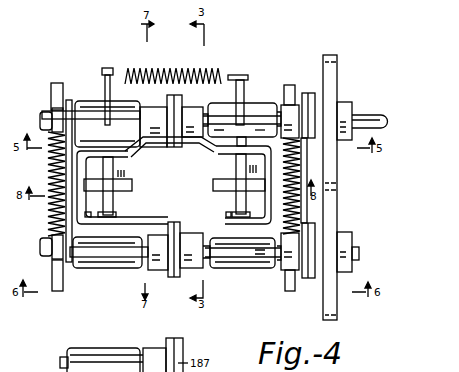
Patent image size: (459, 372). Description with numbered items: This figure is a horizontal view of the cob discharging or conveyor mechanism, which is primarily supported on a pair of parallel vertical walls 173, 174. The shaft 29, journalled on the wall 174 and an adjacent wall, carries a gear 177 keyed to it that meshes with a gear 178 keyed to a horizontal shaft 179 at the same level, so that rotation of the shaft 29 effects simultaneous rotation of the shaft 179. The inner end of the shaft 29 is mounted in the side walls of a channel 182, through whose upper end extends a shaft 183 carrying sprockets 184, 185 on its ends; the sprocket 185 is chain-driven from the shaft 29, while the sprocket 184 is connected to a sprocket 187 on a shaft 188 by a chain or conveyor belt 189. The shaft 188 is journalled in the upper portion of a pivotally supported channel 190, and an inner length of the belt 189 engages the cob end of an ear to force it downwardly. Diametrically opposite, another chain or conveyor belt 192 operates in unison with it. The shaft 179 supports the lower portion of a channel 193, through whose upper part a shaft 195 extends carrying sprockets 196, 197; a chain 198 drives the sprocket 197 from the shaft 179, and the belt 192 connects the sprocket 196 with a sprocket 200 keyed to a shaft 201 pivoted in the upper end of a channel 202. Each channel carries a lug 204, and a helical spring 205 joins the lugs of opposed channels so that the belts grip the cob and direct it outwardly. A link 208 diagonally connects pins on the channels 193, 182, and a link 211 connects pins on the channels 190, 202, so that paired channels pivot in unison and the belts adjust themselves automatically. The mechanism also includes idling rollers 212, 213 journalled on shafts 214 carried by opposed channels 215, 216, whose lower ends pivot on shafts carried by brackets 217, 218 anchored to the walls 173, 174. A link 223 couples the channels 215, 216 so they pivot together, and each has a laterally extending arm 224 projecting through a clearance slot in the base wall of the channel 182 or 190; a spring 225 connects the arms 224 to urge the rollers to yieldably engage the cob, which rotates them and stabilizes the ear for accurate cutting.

The shaft 29 is at (365, 117).
The vertical wall 173 is at (60, 292).
The vertical wall 174 is at (290, 84).
The gear 177 is at (334, 72).
The gear 178 is at (337, 310).
The horizontal shaft 179 is at (360, 255).
The channel 182 is at (230, 106).
The shaft 183 is at (257, 118).
The sprocket 184 is at (198, 86).
The sprocket 185 is at (313, 93).
The sprocket 187 is at (160, 108).
The shaft 188 is at (92, 118).
The chain or conveyor belt 189 is at (183, 150).
The channel 190 is at (133, 103).
The chain or conveyor belt 192 is at (177, 222).
The channel 193 is at (250, 272).
The shaft 195 is at (246, 259).
The sprocket 196 is at (190, 239).
The sprocket 197 is at (292, 291).
The chain 198 is at (316, 224).
The sprocket 200 is at (162, 266).
The shaft 201 is at (118, 252).
The channel 202 is at (142, 270).
The lug 204 is at (42, 116).
The helical spring 205 is at (48, 212).
The link 208 is at (280, 232).
The link 211 is at (60, 221).
The idling roller 212 is at (123, 187).
The idling roller 213 is at (212, 185).
The shaft 214 is at (112, 209).
The channel 215 is at (87, 222).
The channel 216 is at (266, 218).
The bracket 217 is at (113, 224).
The bracket 218 is at (273, 150).
The link 223 is at (215, 155).
The laterally extending arm 224 is at (112, 69).
The spring 225 is at (212, 66).